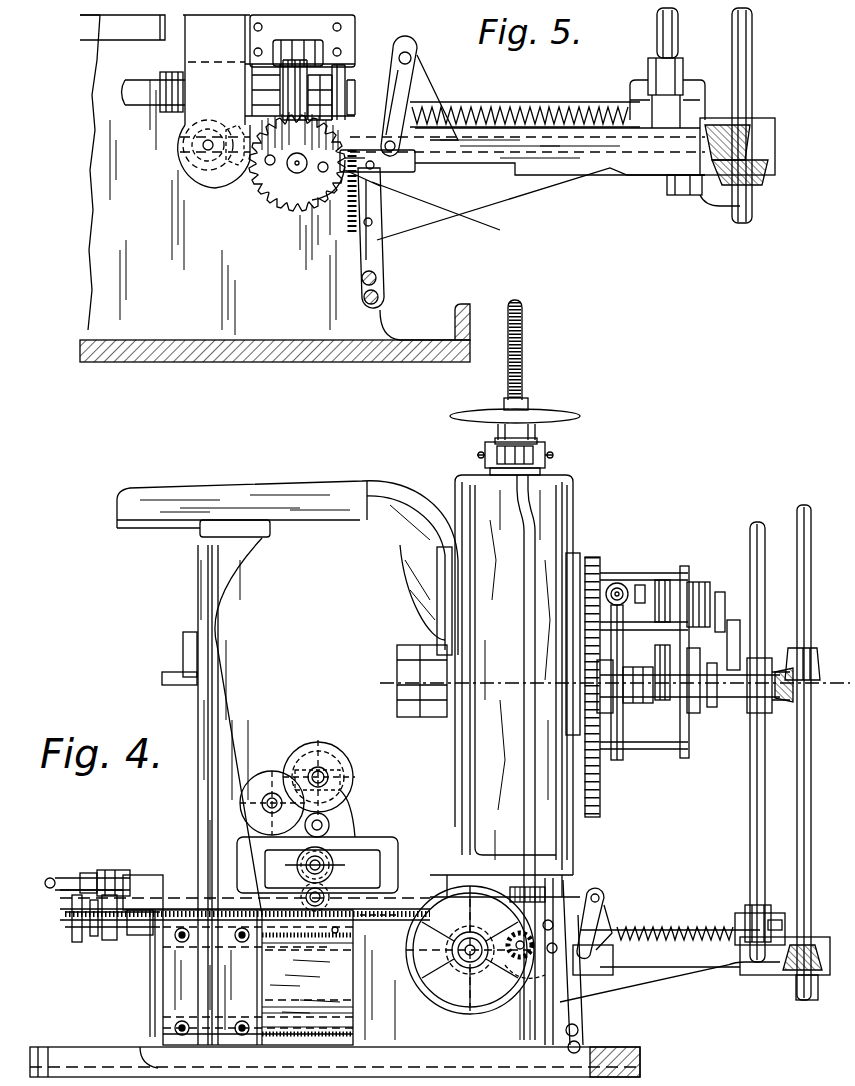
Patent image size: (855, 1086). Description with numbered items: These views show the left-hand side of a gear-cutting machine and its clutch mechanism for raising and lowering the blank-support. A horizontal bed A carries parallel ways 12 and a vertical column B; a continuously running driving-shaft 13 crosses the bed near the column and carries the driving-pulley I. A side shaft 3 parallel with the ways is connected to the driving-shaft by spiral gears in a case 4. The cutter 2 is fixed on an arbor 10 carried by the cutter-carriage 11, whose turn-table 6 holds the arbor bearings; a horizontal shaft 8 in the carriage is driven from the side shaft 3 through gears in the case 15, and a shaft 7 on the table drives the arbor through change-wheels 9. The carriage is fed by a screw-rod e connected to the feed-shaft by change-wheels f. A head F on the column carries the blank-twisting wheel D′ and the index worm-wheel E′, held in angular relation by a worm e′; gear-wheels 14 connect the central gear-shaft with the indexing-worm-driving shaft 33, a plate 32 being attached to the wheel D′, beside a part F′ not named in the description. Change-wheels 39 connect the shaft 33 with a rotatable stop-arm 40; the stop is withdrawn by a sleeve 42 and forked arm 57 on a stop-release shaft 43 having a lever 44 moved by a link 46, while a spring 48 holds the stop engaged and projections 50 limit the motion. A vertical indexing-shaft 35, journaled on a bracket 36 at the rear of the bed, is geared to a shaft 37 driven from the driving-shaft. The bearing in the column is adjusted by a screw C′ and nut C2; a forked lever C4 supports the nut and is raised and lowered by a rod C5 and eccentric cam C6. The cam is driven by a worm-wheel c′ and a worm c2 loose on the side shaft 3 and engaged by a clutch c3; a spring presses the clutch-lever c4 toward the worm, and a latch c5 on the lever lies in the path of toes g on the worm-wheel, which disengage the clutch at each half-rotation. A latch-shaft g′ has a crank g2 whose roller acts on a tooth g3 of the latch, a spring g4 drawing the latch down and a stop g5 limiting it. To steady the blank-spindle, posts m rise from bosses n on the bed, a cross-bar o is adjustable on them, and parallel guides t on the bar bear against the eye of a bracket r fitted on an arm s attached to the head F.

In FIG. 5, the ways 12 is at (122, 27).
In FIG. 4, the ways 12 is at (176, 880).
In FIG. 5, the side shaft 3 is at (125, 92).
In FIG. 4, the side shaft 3 is at (377, 925).
In FIG. 5, the driving-shaft 13 is at (205, 148).
In FIG. 4, the driving-shaft 13 is at (458, 958).
In FIG. 5, the worm c2 is at (288, 62).
In FIG. 5, the clutch c3 is at (338, 65).
In FIG. 5, the toes g is at (292, 232).
In FIG. 5, the worm-wheel c′ is at (278, 214).
In FIG. 5, the latch-shaft g′ is at (410, 52).
In FIG. 4, the latch-shaft g′ is at (598, 892).
In FIG. 5, the crank g2 is at (412, 92).
In FIG. 5, the tooth g3 is at (416, 162).
In FIG. 5, the spring g4 is at (352, 222).
In FIG. 5, the stop g5 is at (415, 200).
In FIG. 5, the clutch-lever c4 is at (384, 250).
In FIG. 5, the latch c5 is at (478, 220).
In FIG. 5, the shaft 37 is at (530, 152).
In FIG. 5, the bracket 36 is at (560, 185).
In FIG. 4, the bracket 36 is at (690, 968).
In FIG. 5, the link 46 is at (512, 104).
In FIG. 5, the spring 48 is at (548, 108).
In FIG. 5, the projections 50 is at (632, 83).
In FIG. 4, the projections 50 is at (745, 915).
In FIG. 5, the stop-release shaft 43 is at (679, 33).
In FIG. 4, the stop-release shaft 43 is at (750, 848).
In FIG. 5, the indexing-shaft 35 is at (753, 57).
In FIG. 4, the indexing-shaft 35 is at (797, 848).
In FIG. 5, the bed A is at (275, 188).
In FIG. 4, the bed A is at (163, 1020).
In FIG. 4, the case 4 is at (430, 908).
In FIG. 4, the screw-rod e is at (82, 883).
In FIG. 4, the change-wheels f is at (108, 948).
In FIG. 4, the bracket r is at (242, 575).
In FIG. 4, the cross-bar o is at (183, 637).
In FIG. 4, the parallel guides t is at (162, 680).
In FIG. 4, the arm s is at (287, 555).
In FIG. 4, the column B is at (505, 688).
In FIG. 4, the rod C5 is at (612, 963).
In FIG. 4, the screw C′ is at (529, 355).
In FIG. 4, the nut C2 is at (533, 418).
In FIG. 4, the lever C4 is at (597, 1022).
In FIG. 4, the head F is at (444, 718).
In FIG. 4, the bracket F′ is at (578, 560).
In FIG. 4, the blank-twisting wheel D′ is at (600, 560).
In FIG. 4, the plate 32 is at (684, 566).
In FIG. 4, the worm e′ is at (618, 583).
In FIG. 4, the indexing-worm-driving shaft 33 is at (662, 580).
In FIG. 4, the change-wheels 39 is at (706, 592).
In FIG. 4, the gear-wheels 14 is at (655, 665).
In FIG. 4, the worm-wheel E′ is at (622, 728).
In FIG. 4, the stop-arm 40 is at (758, 660).
In FIG. 4, the sleeve 42 is at (733, 705).
In FIG. 4, the forked arm 57 is at (760, 712).
In FIG. 4, the lever 44 is at (778, 918).
In FIG. 4, the driving-pulley I is at (412, 985).
In FIG. 4, the eccentric cam C6 is at (505, 960).
In FIG. 4, the turn-table 6 is at (390, 840).
In FIG. 4, the cutter-carriage 11 is at (398, 862).
In FIG. 4, the shaft 7 is at (345, 866).
In FIG. 4, the cutter 2 is at (308, 750).
In FIG. 4, the arbor 10 is at (325, 772).
In FIG. 4, the change-wheels 9 is at (285, 755).
In FIG. 4, the horizontal shaft 8 is at (330, 820).
In FIG. 4, the case 15 is at (333, 935).
In FIG. 4, the posts m is at (309, 971).
In FIG. 4, the bosses n is at (309, 999).